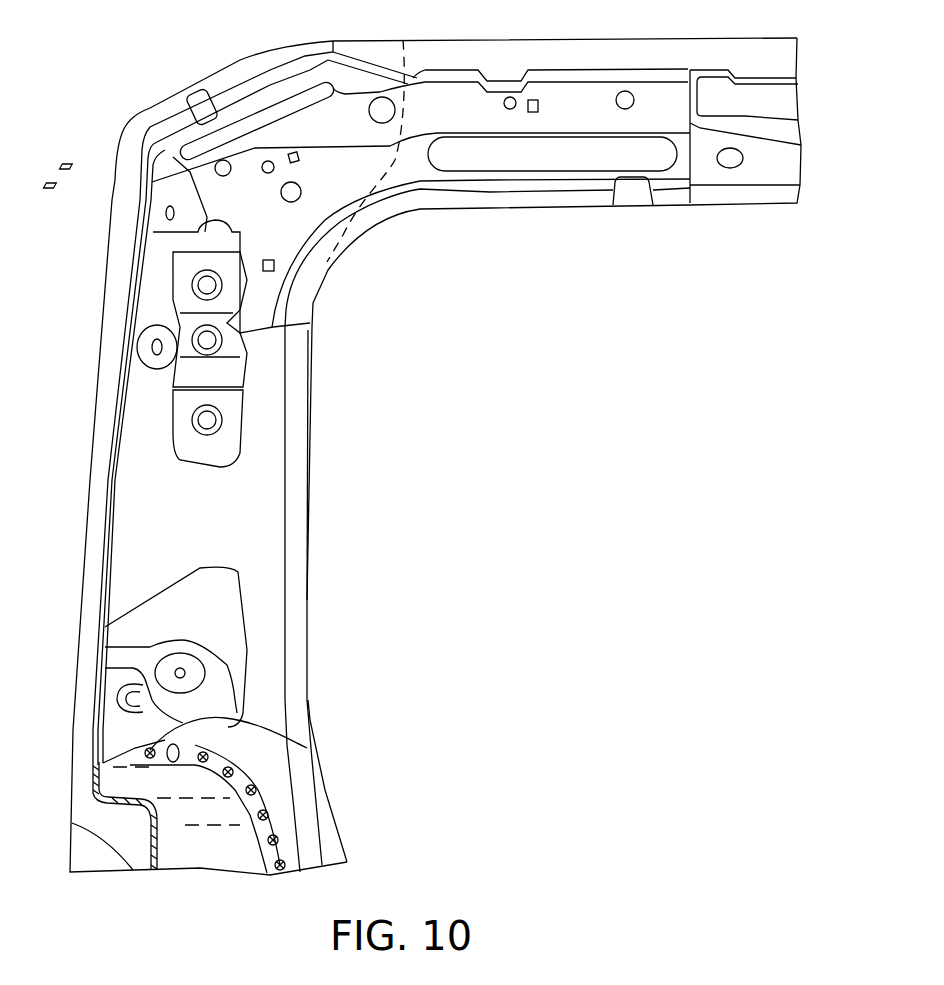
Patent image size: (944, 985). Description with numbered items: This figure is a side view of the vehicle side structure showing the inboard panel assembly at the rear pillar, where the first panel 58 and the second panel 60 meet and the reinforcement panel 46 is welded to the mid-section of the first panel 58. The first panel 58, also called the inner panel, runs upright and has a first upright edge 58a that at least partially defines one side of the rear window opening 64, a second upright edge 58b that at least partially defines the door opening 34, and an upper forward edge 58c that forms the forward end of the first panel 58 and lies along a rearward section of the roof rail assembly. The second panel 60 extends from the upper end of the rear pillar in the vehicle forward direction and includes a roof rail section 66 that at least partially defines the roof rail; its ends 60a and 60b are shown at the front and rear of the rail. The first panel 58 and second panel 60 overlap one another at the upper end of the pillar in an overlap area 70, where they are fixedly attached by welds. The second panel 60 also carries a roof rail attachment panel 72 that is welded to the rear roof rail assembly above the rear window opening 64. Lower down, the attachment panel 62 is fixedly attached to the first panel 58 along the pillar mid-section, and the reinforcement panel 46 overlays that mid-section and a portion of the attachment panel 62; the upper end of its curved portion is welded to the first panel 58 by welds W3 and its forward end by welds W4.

The door opening 34 is at (307, 643).
The reinforcement panel 46 is at (212, 850).
The first panel 58 is at (240, 505).
The first upright edge 58a is at (112, 493).
The second upright edge 58b is at (307, 411).
The upper forward edge 58c is at (383, 170).
The second panel 60 is at (580, 105).
The front end of roof side rail 60a is at (170, 222).
The rear end of roof side rail 60b is at (695, 165).
The attachment panel 62 is at (140, 833).
The rear window opening 64 is at (102, 561).
The roof rail section 66 is at (468, 110).
The overlap area 70 is at (273, 230).
The roof rail attachment panel 72 is at (247, 87).
The welds W3 is at (203, 757).
The welds W4 is at (263, 815).